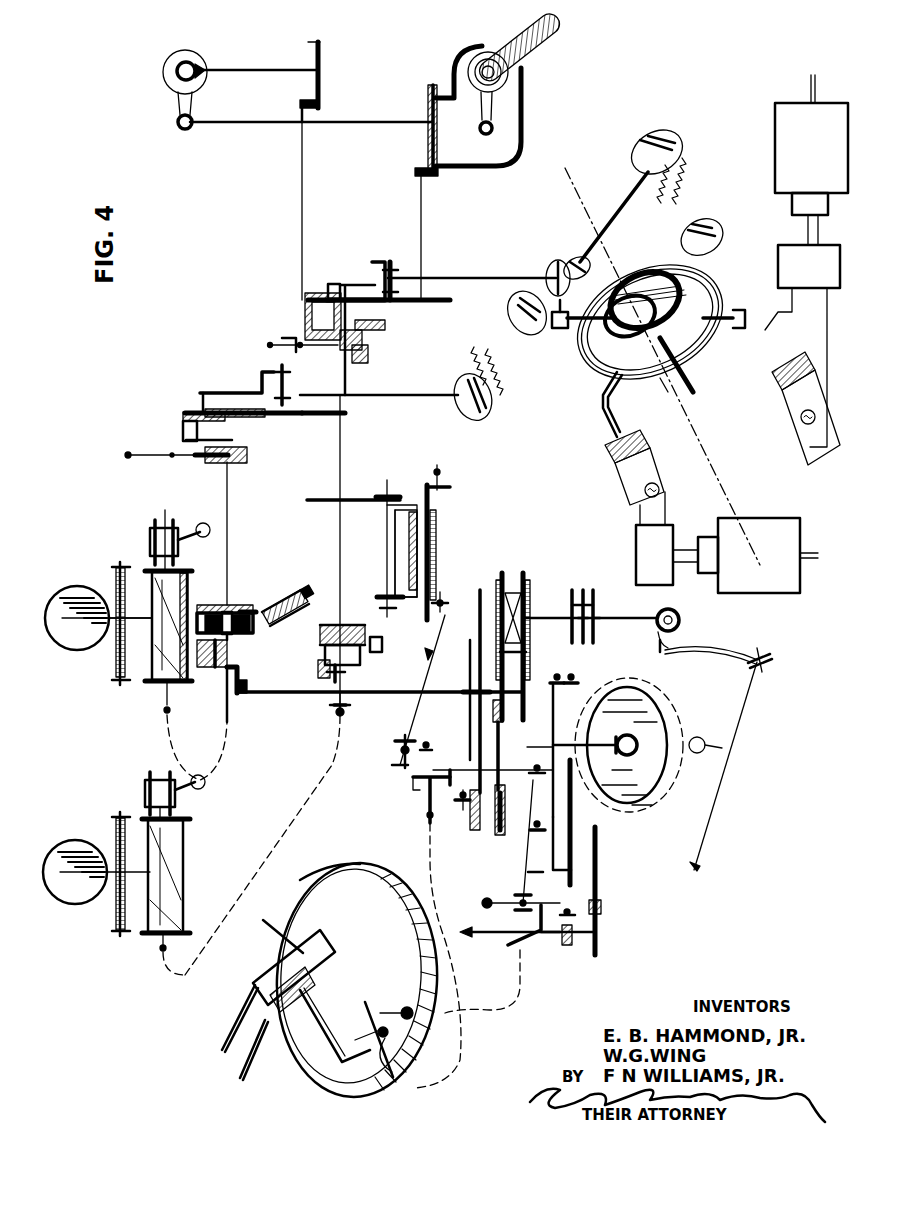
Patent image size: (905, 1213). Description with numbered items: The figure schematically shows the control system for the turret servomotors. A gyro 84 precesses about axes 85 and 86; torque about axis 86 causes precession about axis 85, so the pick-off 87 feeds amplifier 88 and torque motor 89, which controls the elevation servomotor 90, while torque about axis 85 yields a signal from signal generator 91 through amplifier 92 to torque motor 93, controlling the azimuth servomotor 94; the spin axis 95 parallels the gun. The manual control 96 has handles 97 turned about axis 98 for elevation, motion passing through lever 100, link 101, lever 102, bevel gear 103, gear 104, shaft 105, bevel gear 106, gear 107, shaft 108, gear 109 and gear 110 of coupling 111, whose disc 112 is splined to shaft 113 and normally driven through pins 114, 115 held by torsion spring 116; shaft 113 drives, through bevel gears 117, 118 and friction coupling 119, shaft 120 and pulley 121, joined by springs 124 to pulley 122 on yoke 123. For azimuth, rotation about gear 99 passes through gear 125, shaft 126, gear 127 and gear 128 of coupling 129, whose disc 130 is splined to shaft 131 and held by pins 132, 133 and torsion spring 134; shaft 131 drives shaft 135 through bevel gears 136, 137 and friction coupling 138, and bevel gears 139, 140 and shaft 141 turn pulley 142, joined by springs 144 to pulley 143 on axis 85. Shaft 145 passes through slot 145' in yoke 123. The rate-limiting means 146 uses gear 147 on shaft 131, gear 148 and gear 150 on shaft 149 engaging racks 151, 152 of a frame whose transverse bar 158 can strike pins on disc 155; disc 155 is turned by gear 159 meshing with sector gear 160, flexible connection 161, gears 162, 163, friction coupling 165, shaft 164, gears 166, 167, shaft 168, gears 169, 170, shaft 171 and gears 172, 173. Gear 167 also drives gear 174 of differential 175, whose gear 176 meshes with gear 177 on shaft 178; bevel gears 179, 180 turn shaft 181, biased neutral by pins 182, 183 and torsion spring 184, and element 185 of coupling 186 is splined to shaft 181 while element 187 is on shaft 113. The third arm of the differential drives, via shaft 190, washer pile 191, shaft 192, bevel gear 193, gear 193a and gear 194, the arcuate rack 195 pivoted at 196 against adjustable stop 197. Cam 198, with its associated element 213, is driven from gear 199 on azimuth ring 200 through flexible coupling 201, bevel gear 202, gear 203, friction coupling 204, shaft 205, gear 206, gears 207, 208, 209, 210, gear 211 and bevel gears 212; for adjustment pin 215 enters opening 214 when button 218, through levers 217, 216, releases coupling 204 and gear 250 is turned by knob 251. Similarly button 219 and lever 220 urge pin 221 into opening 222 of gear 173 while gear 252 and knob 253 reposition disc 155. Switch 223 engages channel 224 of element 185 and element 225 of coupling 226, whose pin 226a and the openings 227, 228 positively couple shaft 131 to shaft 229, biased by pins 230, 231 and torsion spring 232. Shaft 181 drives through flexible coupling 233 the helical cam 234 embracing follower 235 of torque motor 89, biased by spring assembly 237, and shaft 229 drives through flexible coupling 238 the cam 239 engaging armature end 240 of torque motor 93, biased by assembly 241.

The gyro 84 is at (572, 378).
The precession axis 85 is at (620, 390).
The precession axis 86 is at (618, 296).
The signal generator 87 is at (608, 467).
The amplifier 88 is at (636, 558).
The torque motor 89 is at (708, 573).
The elevation servomotor 90 is at (768, 520).
The signal generator 91 is at (763, 375).
The amplifier 92 is at (793, 305).
The torque motor 93 is at (792, 206).
The azimuth servo motor 94 is at (775, 172).
The spin axis 95 is at (580, 192).
The manual control 96 is at (455, 18).
The handle 97 is at (535, 70).
The axis 98 is at (487, 52).
The gear 99 is at (432, 85).
The lever 100 is at (490, 135).
The link 101 is at (365, 123).
The second lever 102 is at (162, 118).
The bevel gear 103 is at (176, 58).
The gear 104 is at (198, 64).
The shaft 105 is at (242, 69).
The bevel gear 106 is at (312, 52).
The gear 107 is at (298, 101).
The shaft 108 is at (301, 198).
The gear 109 is at (335, 418).
The gear 110 is at (270, 418).
The coupling 111 is at (173, 428).
The disc 112 is at (243, 465).
The shaft 113 is at (226, 497).
The pin 114 is at (180, 428).
The pin 115 is at (205, 465).
The torsion spring 116 is at (203, 404).
The bevel gear 117 is at (248, 392).
The bevel gear 118 is at (268, 380).
The friction coupling 119 is at (276, 318).
The shaft 120 is at (405, 395).
The pulley 121 is at (462, 390).
The pulley 122 is at (532, 338).
The yoke 123 is at (565, 330).
The springs 124 is at (500, 390).
The gear 125 is at (416, 172).
The shaft 126 is at (420, 228).
The gear 127 is at (435, 302).
The gear 128 is at (316, 296).
The coupling 129 is at (371, 336).
The disc 130 is at (365, 348).
The shaft 131 is at (335, 376).
The pin 132 is at (304, 298).
The pin 133 is at (300, 345).
The torsion spring 134 is at (333, 290).
The shaft 135 is at (462, 277).
The bevel gear 136 is at (348, 285).
The bevel gear 137 is at (370, 268).
The friction coupling 138 is at (390, 232).
The bevel gear 139 is at (555, 262).
The bevel gear 140 is at (575, 258).
The shaft 141 is at (612, 218).
The pulley 142 is at (645, 140).
The pulley 143 is at (712, 228).
The springs 144 is at (695, 175).
The shaft 145 is at (692, 372).
The slot 145' is at (665, 399).
The rate-limiting means 146 is at (368, 533).
The gear 147 is at (340, 505).
The gear 148 is at (383, 497).
The shaft 149 is at (390, 532).
The gear 150 is at (385, 592).
The rack 151 is at (398, 503).
The rack 152 is at (394, 605).
The disc 155 is at (435, 512).
The transverse bar 158 is at (402, 543).
The gear 159 is at (405, 1040).
The sector gear 160 is at (365, 1050).
The flexible connection 161 is at (428, 840).
The bevel gear 162 is at (418, 778).
The bevel gear 163 is at (450, 785).
The shaft 164 is at (480, 808).
The friction coupling 165 is at (478, 798).
The gear 166 is at (505, 818).
The gear 167 is at (503, 735).
The shaft 168 is at (492, 718).
The gear 169 is at (478, 698).
The gear 170 is at (479, 652).
The shaft 171 is at (479, 640).
The gear 172 is at (420, 656).
The gear 173 is at (440, 522).
The gear 174 is at (501, 575).
The differential 175 is at (553, 563).
The gear 176 is at (522, 575).
The gear 177 is at (526, 658).
The shaft 178 is at (296, 692).
The bevel gear 179 is at (245, 695).
The bevel gear 180 is at (234, 693).
The shaft 181 is at (226, 718).
The pin 182 is at (215, 675).
The pin 183 is at (205, 667).
The torsion spring 184 is at (232, 636).
The coupling element 185 is at (252, 605).
The coupling 186 is at (256, 612).
The coupling element 187 is at (238, 603).
The shaft 190 is at (552, 612).
The washer pile 191 is at (579, 548).
The shaft 192 is at (622, 620).
The bevel gear 193 is at (656, 638).
The gear 193a is at (668, 640).
The gear 194 is at (679, 622).
The arcuate rack 195 is at (692, 655).
The pivot 196 is at (698, 858).
The adjustable stop 197 is at (762, 665).
The cam 198 is at (630, 785).
The gear 199 is at (400, 1010).
The toothed azimuth ring 200 is at (392, 900).
The flexible coupling 201 is at (505, 975).
The bevel gear 202 is at (528, 950).
The gear 203 is at (545, 945).
The friction coupling 204 is at (568, 948).
The shaft 205 is at (580, 952).
The gear 206 is at (600, 920).
The gear 207 is at (598, 850).
The gear 208 is at (560, 871).
The gear 209 is at (575, 835).
The gear 210 is at (540, 838).
The gear 211 is at (556, 714).
The bevel gears 212 is at (620, 728).
The pivot 213 is at (697, 737).
The opening 214 is at (538, 790).
The pin 215 is at (528, 772).
The lever 216 is at (530, 845).
The lever 217 is at (522, 890).
The button 218 is at (489, 896).
The button 219 is at (405, 745).
The lever 220 is at (430, 750).
The pin 221 is at (441, 600).
The opening 222 is at (400, 608).
The switch device 223 is at (291, 566).
The annular channel 224 is at (188, 590).
The coupling element 225 is at (335, 625).
The coupling 226 is at (353, 578).
The pin 226a is at (307, 578).
The opening 227 is at (328, 672).
The opening 228 is at (306, 660).
The shaft 229 is at (330, 707).
The pin 230 is at (382, 637).
The pin 231 is at (355, 692).
The torsion spring 232 is at (344, 712).
The flexible coupling 233 is at (195, 770).
The cam 234 is at (150, 678).
The projecting end of armature 235 is at (127, 615).
The torsion spring and associated elements 237 is at (143, 498).
The flexible coupling 238 is at (298, 845).
The cam 239 is at (150, 952).
The projecting end of armature 240 is at (148, 872).
The torsion spring and associated elements 241 is at (143, 748).
The gear 250 is at (558, 676).
The knob 251 is at (575, 680).
The gear 252 is at (438, 472).
The knob 253 is at (444, 476).